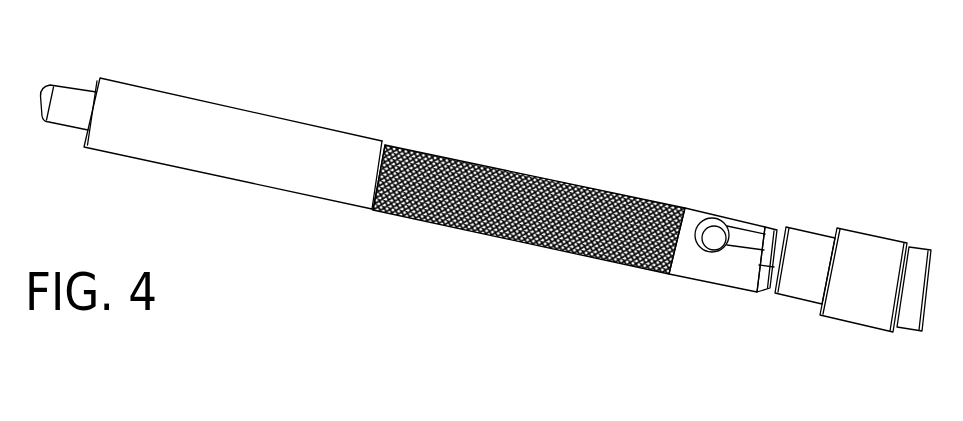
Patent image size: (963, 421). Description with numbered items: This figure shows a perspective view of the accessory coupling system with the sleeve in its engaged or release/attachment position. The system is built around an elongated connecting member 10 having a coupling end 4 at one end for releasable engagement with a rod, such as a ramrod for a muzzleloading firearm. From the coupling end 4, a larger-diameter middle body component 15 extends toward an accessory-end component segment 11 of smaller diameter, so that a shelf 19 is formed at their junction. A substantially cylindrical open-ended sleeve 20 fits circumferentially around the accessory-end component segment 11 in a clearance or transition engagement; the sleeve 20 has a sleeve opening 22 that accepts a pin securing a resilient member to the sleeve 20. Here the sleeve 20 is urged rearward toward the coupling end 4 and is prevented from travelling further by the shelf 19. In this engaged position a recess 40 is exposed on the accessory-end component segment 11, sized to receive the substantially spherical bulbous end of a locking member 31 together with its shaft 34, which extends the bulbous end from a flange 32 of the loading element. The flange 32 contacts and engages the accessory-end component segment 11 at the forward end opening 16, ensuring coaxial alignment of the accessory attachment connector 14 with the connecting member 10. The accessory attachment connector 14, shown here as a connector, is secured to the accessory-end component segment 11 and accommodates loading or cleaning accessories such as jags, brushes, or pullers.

The elongated connecting member 10 is at (345, 233).
The coupling end 4 is at (70, 87).
The middle body component 15 is at (255, 113).
The shelf 19 is at (382, 211).
The open-ended sleeve 20 is at (610, 187).
The sleeve opening 22 is at (526, 247).
The forward end opening 16 is at (746, 298).
The accessory-end component segment 11 is at (703, 270).
The recess 40 is at (728, 207).
The locking member 31 is at (718, 235).
The shaft 34 is at (752, 242).
The flange 32 is at (760, 289).
The accessory attachment connector 14 is at (873, 232).